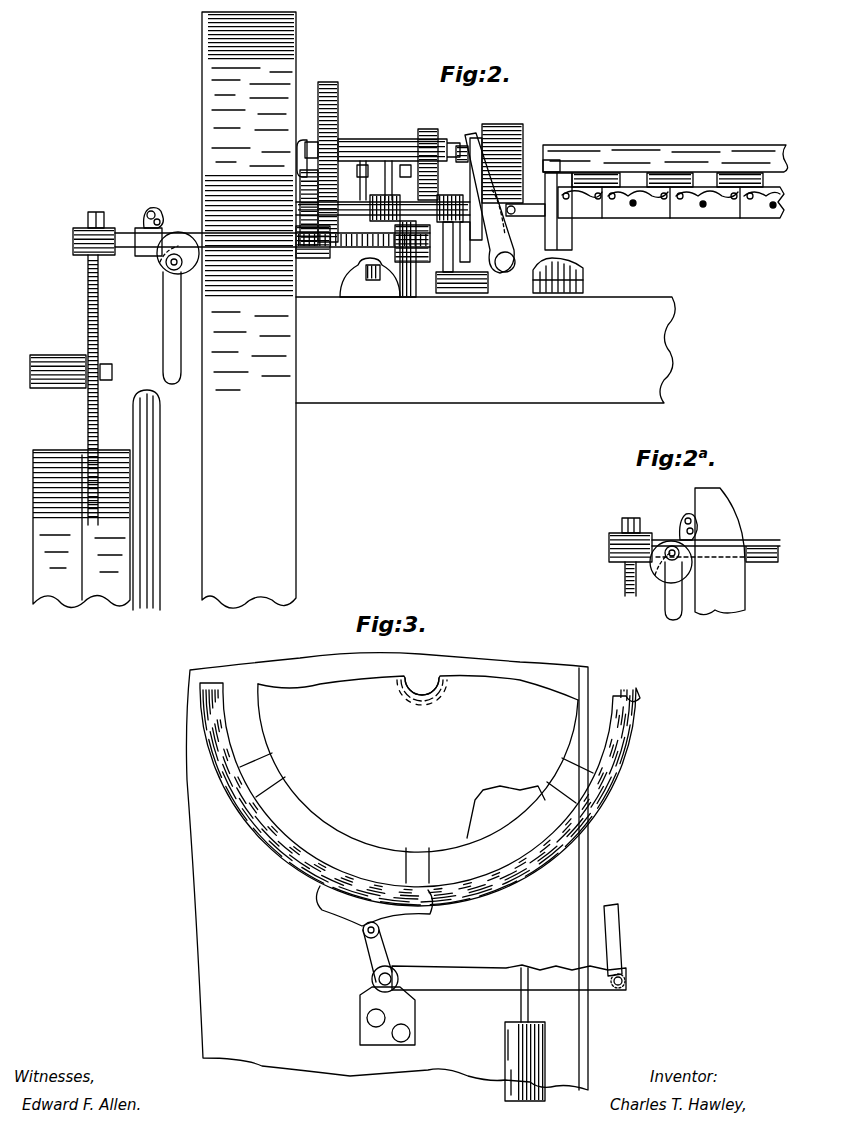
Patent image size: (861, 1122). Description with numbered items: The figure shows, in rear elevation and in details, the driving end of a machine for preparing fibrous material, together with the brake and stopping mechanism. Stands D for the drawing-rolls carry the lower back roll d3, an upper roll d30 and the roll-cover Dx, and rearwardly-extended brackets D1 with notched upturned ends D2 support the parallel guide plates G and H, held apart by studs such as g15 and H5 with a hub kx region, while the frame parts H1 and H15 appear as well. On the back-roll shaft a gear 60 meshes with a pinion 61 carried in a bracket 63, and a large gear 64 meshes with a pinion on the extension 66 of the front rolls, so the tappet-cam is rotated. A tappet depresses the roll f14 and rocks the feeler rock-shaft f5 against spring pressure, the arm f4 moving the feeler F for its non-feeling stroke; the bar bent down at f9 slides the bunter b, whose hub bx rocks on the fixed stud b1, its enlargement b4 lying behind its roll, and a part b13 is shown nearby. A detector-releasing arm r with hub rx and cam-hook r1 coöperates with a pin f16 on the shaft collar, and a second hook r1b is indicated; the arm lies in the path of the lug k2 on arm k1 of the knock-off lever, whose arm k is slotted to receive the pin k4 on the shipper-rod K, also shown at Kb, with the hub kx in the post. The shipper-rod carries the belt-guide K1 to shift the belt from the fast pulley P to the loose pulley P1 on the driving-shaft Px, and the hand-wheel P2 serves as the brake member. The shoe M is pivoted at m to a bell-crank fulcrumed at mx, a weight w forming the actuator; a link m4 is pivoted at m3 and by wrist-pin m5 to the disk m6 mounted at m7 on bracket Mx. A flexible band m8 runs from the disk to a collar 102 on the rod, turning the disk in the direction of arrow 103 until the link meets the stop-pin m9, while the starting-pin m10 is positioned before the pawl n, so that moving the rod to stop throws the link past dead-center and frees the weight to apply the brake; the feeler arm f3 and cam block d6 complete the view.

In FIG. 2, the frame bar H1 is at (204, 108).
In FIG. 3, the frame bar H1 is at (206, 998).
In FIG. 2, the guide plate H is at (494, 395).
In FIG. 2, the frame bracket H5 is at (528, 296).
In FIG. 2, the frame pedestal H15 is at (400, 292).
In FIG. 2, the shipper-rod K is at (128, 233).
In FIG. 2A, the shipper-rod K is at (777, 540).
In FIG. 2, the belt-guide K1 is at (62, 354).
In FIG. 2, the shaft Kb is at (330, 255).
In FIG. 2, the knock-off lever arm k is at (368, 200).
In FIG. 2, the knock-off lever arm k1 is at (420, 210).
In FIG. 2, the depending lug k2 is at (440, 235).
In FIG. 2, the pin k4 is at (378, 150).
In FIG. 2, the hub of knock-off lever kx is at (704, 208).
In FIG. 2, the pawl n is at (142, 226).
In FIG. 2A, the pawl n is at (682, 514).
In FIG. 3, the shoe pivot m is at (364, 936).
In FIG. 3, the link pivot m3 is at (628, 982).
In FIG. 2, the link m4 is at (163, 362).
In FIG. 2A, the link m4 is at (666, 610).
In FIG. 3, the link m4 is at (622, 916).
In FIG. 2, the wrist-pin m5 is at (164, 268).
In FIG. 2A, the wrist-pin m5 is at (696, 540).
In FIG. 2, the disk m6 is at (166, 300).
In FIG. 2A, the disk m6 is at (625, 572).
In FIG. 2, the disk pivot m7 is at (180, 235).
In FIG. 3, the disk pivot m7 is at (392, 954).
In FIG. 2A, the flexible band m8 is at (740, 528).
In FIG. 3, the flexible band m8 is at (486, 988).
In FIG. 2, the stop-pin m9 is at (152, 208).
In FIG. 2A, the stop-pin m9 is at (692, 568).
In FIG. 2, the starting-pin m10 is at (160, 290).
In FIG. 2A, the starting-pin m10 is at (660, 540).
In FIG. 3, the fulcrum mx is at (374, 986).
In FIG. 3, the brake shoe M is at (322, 910).
In FIG. 2, the bracket Mx is at (196, 306).
In FIG. 2A, the bracket Mx is at (652, 578).
In FIG. 2, the fast pulley P is at (121, 639).
In FIG. 2, the loose pulley P1 is at (72, 598).
In FIG. 3, the loose pulley P1 is at (416, 780).
In FIG. 2, the hand-wheel P2 is at (162, 428).
In FIG. 3, the hand-wheel P2 is at (606, 800).
In FIG. 3, the main driving-shaft Px is at (442, 690).
In FIG. 2, the detector-releasing arm r is at (412, 262).
In FIG. 2, the cam-hook r1 is at (145, 258).
In FIG. 2, the rod r1b is at (498, 298).
In FIG. 2, the hub of releasing arm rx is at (366, 277).
In FIG. 2, the bunter b is at (487, 180).
In FIG. 2, the fixed stud b1 is at (455, 292).
In FIG. 2, the enlargement b4 is at (478, 138).
In FIG. 2, the rod b13 is at (478, 292).
In FIG. 2, the bunter hub bx is at (470, 292).
In FIG. 2, the gear f3 is at (515, 180).
In FIG. 2, the feeler arm f4 is at (580, 296).
In FIG. 2, the feeler rock-shaft f5 is at (507, 274).
In FIG. 2, the bent portion of bar f9 is at (505, 170).
In FIG. 2, the roll f14 is at (460, 240).
In FIG. 2, the pin f16 is at (540, 290).
In FIG. 2, the feeler F is at (540, 202).
In FIG. 2, the stand D is at (572, 256).
In FIG. 2, the bracket D1 is at (562, 242).
In FIG. 2, the upturned end D2 is at (556, 168).
In FIG. 2, the roll-cover Dx is at (756, 145).
In FIG. 2, the lower back roll d3 is at (690, 172).
In FIG. 2, the cam block d6 is at (578, 270).
In FIG. 2, the upper roll d30 is at (618, 172).
In FIG. 2, the guide plate G is at (786, 202).
In FIG. 2, the bracket g15 is at (660, 218).
In FIG. 3, the weight w is at (522, 1072).
In FIG. 2, the gear 60 is at (460, 146).
In FIG. 2, the pinion 61 is at (430, 129).
In FIG. 2, the bracket 63 is at (390, 139).
In FIG. 2, the large gear 64 is at (334, 82).
In FIG. 2, the roll extension shaft 66 is at (284, 159).
In FIG. 2, the collar 102 is at (310, 273).
In FIG. 2, the arrow 103 is at (205, 280).